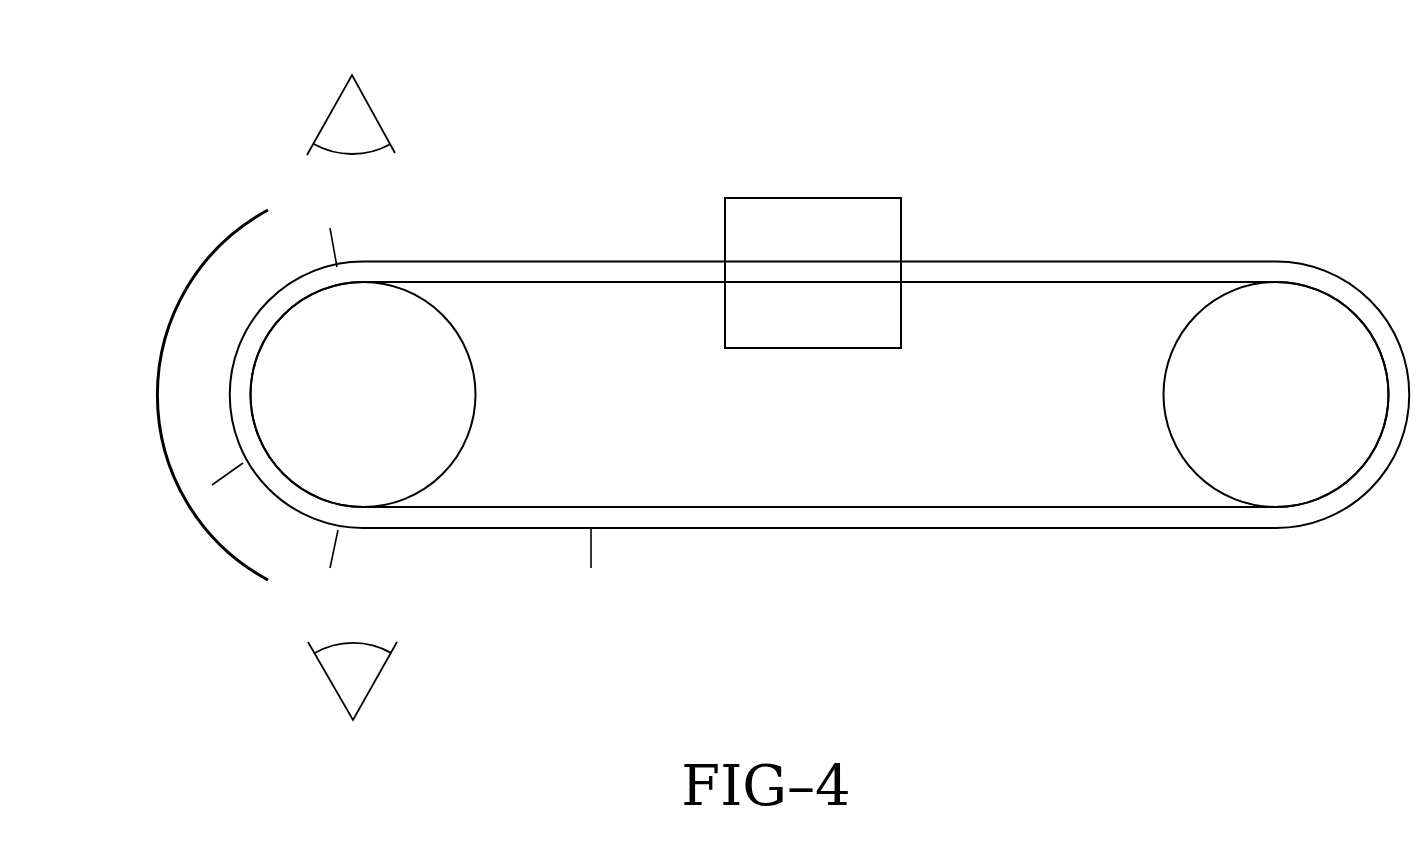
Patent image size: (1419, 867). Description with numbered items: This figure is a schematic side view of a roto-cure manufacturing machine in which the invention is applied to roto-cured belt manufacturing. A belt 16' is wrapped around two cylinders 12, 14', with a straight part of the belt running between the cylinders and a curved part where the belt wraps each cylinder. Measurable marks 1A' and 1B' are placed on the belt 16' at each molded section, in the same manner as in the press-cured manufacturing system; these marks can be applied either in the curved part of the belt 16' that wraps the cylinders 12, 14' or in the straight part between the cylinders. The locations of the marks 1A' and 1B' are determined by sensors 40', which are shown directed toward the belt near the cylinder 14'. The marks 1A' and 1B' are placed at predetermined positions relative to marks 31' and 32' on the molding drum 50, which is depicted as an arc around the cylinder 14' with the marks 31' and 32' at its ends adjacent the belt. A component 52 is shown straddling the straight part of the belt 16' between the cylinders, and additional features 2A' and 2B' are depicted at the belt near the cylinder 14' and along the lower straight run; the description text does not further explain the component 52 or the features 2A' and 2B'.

The cylinder 12 is at (1262, 410).
The cylinder 14' is at (363, 394).
The belt 16' is at (820, 303).
The molding drum 50 is at (212, 247).
The sensor / control unit 52 is at (835, 197).
The mark on the molding drum 31' is at (263, 197).
The mark on the molding drum 32' is at (261, 603).
The measurable mark 1A' is at (389, 217).
The measurable mark 1B' is at (374, 573).
The belt end position marker 2A' is at (204, 439).
The lower belt position marker 2B' is at (630, 586).
The sensors 40' is at (331, 399).